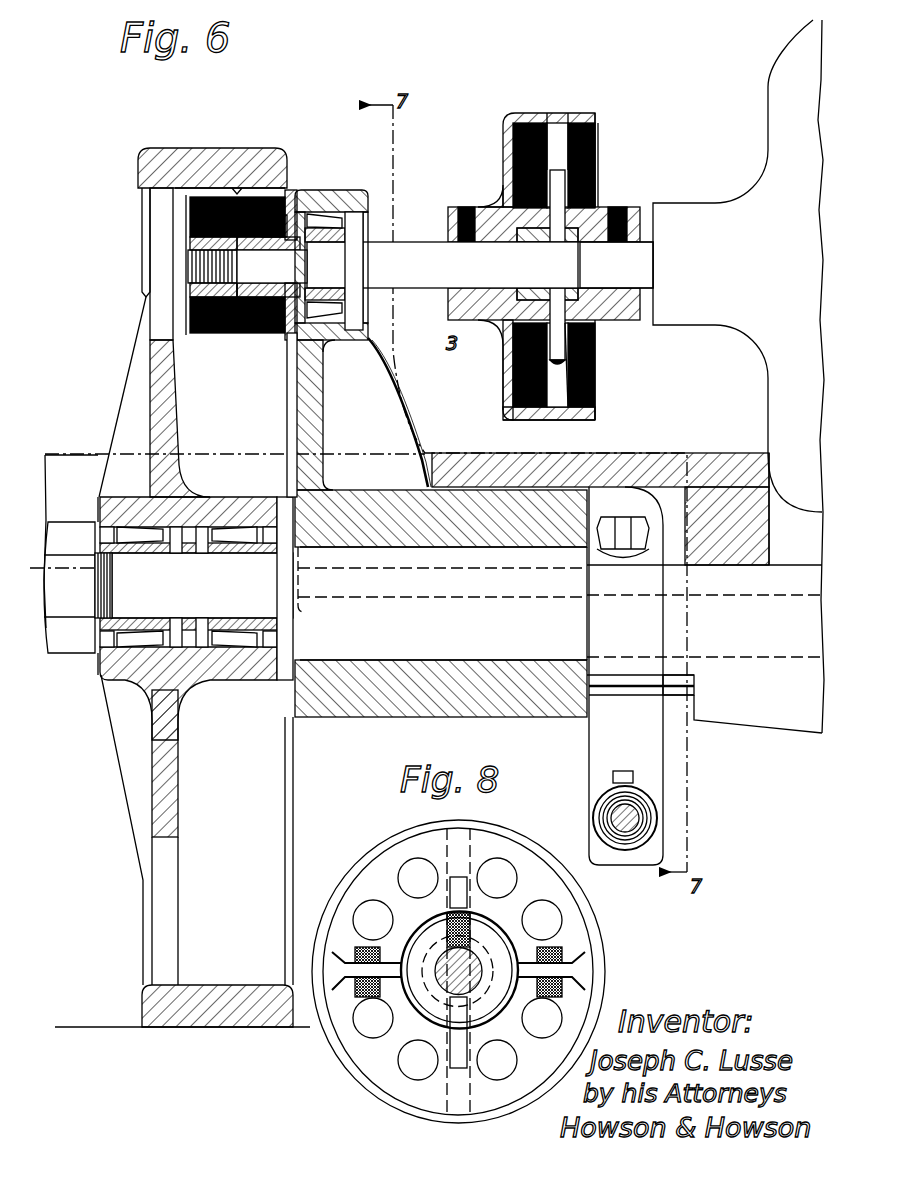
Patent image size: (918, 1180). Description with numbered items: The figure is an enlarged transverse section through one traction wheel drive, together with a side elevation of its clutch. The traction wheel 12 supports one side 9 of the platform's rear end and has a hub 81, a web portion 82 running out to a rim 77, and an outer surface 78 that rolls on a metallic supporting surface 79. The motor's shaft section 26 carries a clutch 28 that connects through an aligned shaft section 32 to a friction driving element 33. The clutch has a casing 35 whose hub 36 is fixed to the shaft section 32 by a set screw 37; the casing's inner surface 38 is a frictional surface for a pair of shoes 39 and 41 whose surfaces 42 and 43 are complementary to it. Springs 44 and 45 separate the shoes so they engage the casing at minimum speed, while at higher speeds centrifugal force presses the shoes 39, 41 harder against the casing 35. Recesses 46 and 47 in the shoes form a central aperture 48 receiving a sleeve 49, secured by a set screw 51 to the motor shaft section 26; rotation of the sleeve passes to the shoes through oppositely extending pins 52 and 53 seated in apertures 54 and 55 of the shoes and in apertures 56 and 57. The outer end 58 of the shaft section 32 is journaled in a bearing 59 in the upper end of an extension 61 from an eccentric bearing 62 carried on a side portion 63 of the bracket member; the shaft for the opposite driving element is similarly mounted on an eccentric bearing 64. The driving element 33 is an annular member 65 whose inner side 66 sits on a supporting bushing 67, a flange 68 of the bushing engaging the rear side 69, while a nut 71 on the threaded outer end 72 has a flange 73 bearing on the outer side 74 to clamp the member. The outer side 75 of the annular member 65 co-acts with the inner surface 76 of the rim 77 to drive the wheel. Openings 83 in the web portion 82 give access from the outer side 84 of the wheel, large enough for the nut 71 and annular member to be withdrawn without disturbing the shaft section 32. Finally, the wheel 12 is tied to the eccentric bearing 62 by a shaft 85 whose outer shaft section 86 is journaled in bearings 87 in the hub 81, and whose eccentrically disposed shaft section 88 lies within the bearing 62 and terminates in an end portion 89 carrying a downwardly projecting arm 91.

In FIG. 6, the side of the rear end of the platform 9 is at (458, 455).
In FIG. 6, the traction wheel 12 is at (215, 1022).
In FIG. 6, the shaft section 26 is at (616, 265).
In FIG. 6, the clutch 28 is at (578, 112).
In FIG. 6, the shaft section 32 is at (413, 242).
In FIG. 6, the driving element 33 is at (233, 334).
In FIG. 6, the casing 35 is at (549, 426).
In FIG. 6, the hub 36 is at (496, 325).
In FIG. 6, the set screw 37 is at (466, 207).
In FIG. 6, the inner surface 38 is at (614, 370).
In FIG. 6, the shoe 39 is at (528, 104).
In FIG. 8, the shoe 39 is at (515, 832).
In FIG. 6, the shoe 41 is at (590, 422).
In FIG. 8, the shoe 41 is at (372, 1057).
In FIG. 6, the surface 42 is at (553, 112).
In FIG. 8, the surface 42 is at (540, 857).
In FIG. 6, the surface 43 is at (503, 412).
In FIG. 8, the surface 43 is at (394, 1088).
In FIG. 8, the spring 44 is at (366, 997).
In FIG. 8, the spring 45 is at (553, 947).
In FIG. 8, the recess 46 is at (490, 927).
In FIG. 8, the recess 47 is at (503, 1013).
In FIG. 8, the central aperture 48 is at (417, 1008).
In FIG. 6, the sleeve 49 is at (600, 214).
In FIG. 6, the set screw 51 is at (622, 207).
In FIG. 6, the pin 52 is at (596, 160).
In FIG. 6, the pin 53 is at (596, 352).
In FIG. 6, the aperture 54 is at (598, 372).
In FIG. 6, the aperture 55 is at (552, 142).
In FIG. 6, the aperture 56 is at (562, 315).
In FIG. 6, the aperture 57 is at (600, 175).
In FIG. 6, the outer end 58 is at (354, 232).
In FIG. 6, the bearing 59 is at (318, 212).
In FIG. 6, the extension 61 is at (376, 356).
In FIG. 6, the eccentric bearing 62 is at (372, 490).
In FIG. 6, the side portion 63 is at (738, 376).
In FIG. 6, the eccentric bearing 64 is at (600, 372).
In FIG. 6, the annular member 65 is at (288, 338).
In FIG. 6, the inner side 66 is at (253, 334).
In FIG. 6, the supporting bushing 67 is at (262, 256).
In FIG. 6, the flange 68 is at (294, 200).
In FIG. 6, the rear side 69 is at (325, 352).
In FIG. 6, the nut 71 is at (192, 246).
In FIG. 6, the threaded outer end 72 is at (188, 265).
In FIG. 6, the flange 73 is at (200, 222).
In FIG. 6, the outer side 74 is at (190, 200).
In FIG. 6, the outer side 75 is at (215, 200).
In FIG. 6, the inner surface 76 is at (240, 186).
In FIG. 6, the rim 77 is at (245, 186).
In FIG. 6, the outer surface 78 is at (150, 150).
In FIG. 6, the metallic supporting surface 79 is at (172, 1026).
In FIG. 6, the hub 81 is at (132, 497).
In FIG. 6, the web portion 82 is at (178, 418).
In FIG. 6, the opening 83 is at (147, 328).
In FIG. 6, the outer side 84 is at (152, 387).
In FIG. 6, the shaft 85 is at (442, 603).
In FIG. 6, the outer shaft section 86 is at (190, 603).
In FIG. 6, the bearing 87 is at (205, 620).
In FIG. 6, the eccentrically disposed shaft section 88 is at (653, 620).
In FIG. 6, the end portion 89 is at (631, 652).
In FIG. 6, the downwardly projecting arm 91 is at (660, 733).